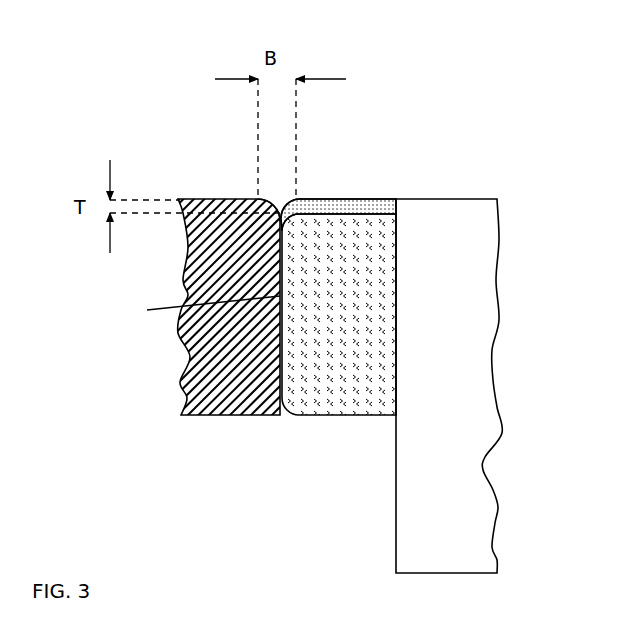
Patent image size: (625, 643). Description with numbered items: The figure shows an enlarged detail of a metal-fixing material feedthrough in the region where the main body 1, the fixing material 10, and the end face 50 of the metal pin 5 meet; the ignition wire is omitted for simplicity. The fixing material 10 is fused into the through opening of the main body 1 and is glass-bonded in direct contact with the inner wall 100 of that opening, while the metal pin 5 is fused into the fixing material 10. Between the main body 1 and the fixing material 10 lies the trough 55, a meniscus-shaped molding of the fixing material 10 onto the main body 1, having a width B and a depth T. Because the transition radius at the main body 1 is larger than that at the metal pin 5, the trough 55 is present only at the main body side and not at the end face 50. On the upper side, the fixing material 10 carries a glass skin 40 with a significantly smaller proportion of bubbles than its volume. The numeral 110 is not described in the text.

The main body 1 is at (195, 397).
The inner wall of the through opening 100 is at (147, 310).
The trough 55 is at (275, 198).
The fixing material 10 is at (322, 403).
The glass skin 40 is at (372, 198).
The surface layer 110 is at (347, 198).
The end face of the metal pin 50 is at (462, 198).
The metal pin 5 is at (475, 518).